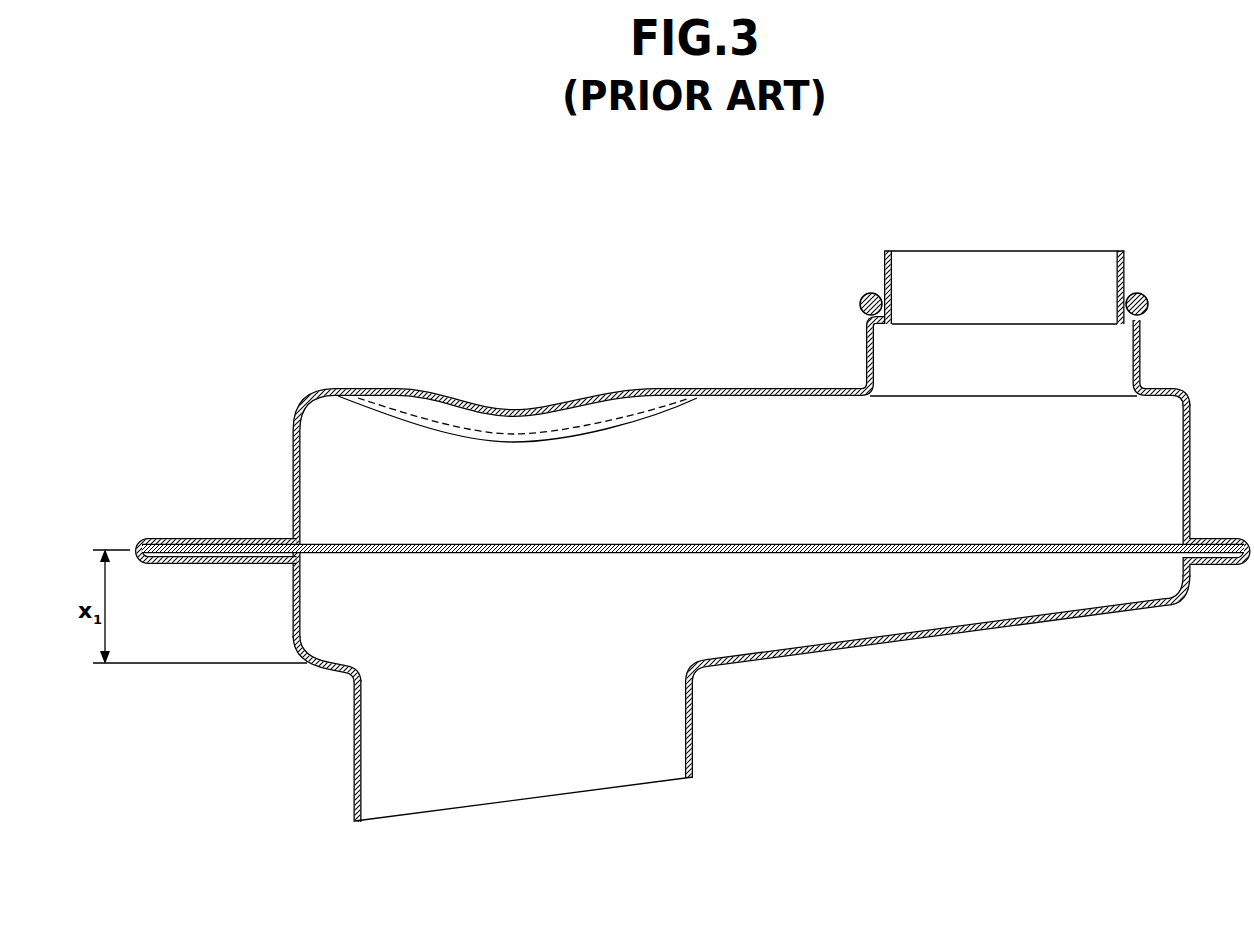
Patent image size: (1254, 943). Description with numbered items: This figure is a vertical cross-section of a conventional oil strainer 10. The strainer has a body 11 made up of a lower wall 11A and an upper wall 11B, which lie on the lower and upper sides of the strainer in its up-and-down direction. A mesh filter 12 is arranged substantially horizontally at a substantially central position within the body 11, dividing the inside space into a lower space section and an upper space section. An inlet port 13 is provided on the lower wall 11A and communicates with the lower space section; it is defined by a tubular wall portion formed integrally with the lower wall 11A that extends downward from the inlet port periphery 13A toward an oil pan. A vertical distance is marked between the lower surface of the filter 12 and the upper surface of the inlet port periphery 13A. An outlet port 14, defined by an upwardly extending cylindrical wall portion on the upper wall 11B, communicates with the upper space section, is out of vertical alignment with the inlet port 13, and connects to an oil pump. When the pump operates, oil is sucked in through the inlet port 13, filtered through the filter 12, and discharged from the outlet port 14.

The conventional oil strainer 10 is at (692, 310).
The body 11 is at (290, 467).
The lower wall 11A is at (905, 644).
The upper wall 11B is at (774, 386).
The filter 12 is at (997, 543).
The inlet port 13 is at (587, 727).
The inlet port periphery 13A is at (347, 676).
The outlet port 14 is at (1050, 288).